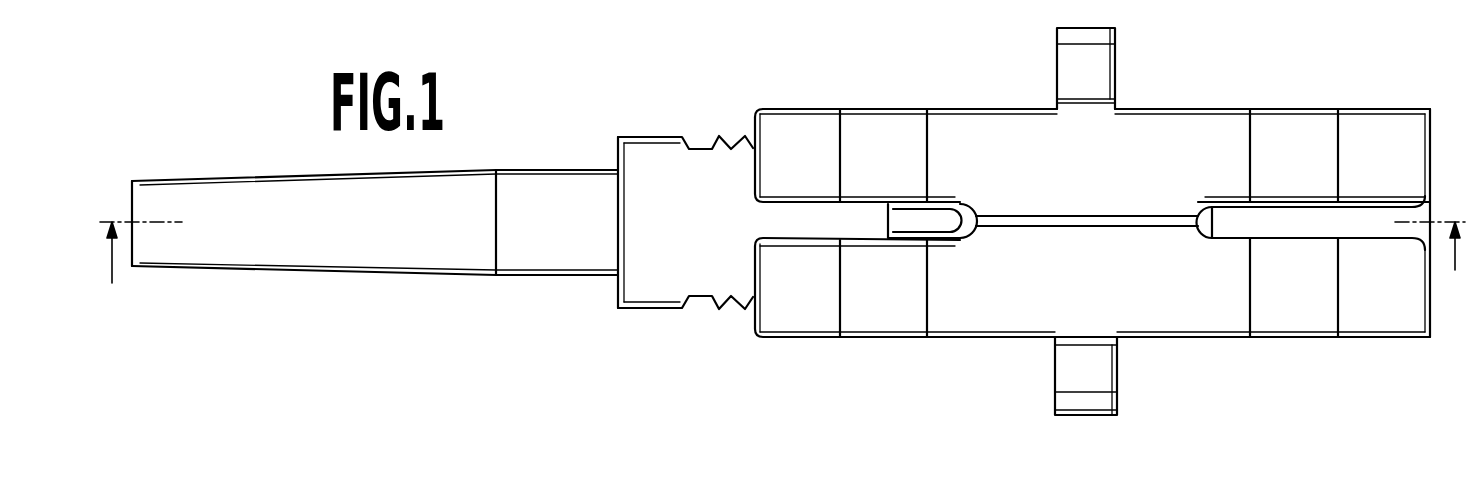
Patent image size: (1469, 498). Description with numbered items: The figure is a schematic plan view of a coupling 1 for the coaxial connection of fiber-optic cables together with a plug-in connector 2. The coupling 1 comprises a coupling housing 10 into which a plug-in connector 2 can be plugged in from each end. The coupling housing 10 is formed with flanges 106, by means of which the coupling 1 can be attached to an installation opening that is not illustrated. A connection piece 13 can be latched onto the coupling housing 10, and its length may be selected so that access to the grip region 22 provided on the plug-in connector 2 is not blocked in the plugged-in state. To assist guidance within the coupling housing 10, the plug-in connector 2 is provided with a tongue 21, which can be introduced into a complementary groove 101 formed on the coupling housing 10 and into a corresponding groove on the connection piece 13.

The coupling 1 is at (1195, 88).
The plug-in connector 2 is at (442, 194).
The coupling housing 10 is at (1143, 120).
The connection piece 13 is at (820, 130).
The tongue 21 is at (915, 223).
The grip region 22 is at (668, 267).
The groove 101 is at (960, 200).
The flanges 106 is at (1098, 372).